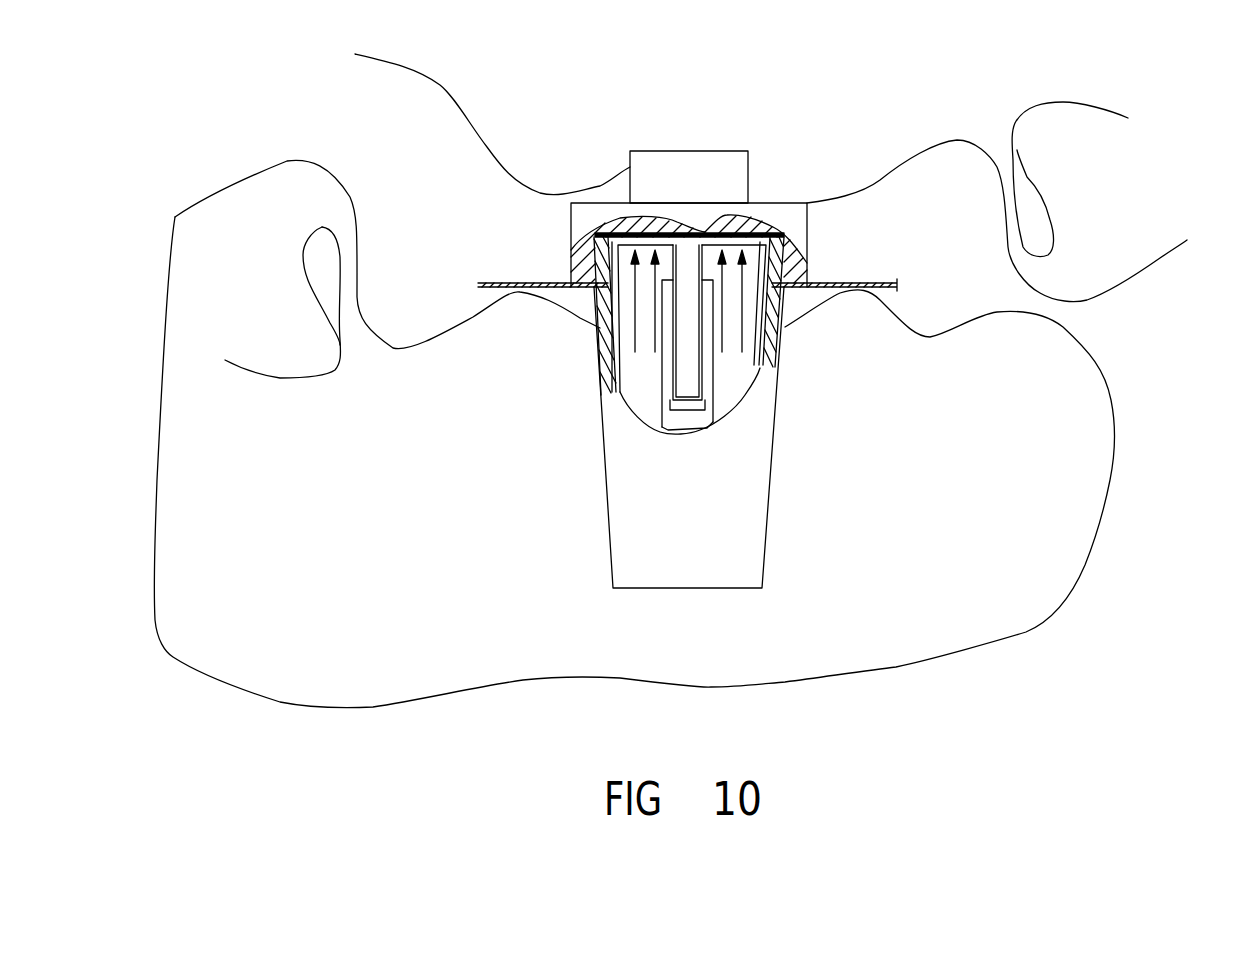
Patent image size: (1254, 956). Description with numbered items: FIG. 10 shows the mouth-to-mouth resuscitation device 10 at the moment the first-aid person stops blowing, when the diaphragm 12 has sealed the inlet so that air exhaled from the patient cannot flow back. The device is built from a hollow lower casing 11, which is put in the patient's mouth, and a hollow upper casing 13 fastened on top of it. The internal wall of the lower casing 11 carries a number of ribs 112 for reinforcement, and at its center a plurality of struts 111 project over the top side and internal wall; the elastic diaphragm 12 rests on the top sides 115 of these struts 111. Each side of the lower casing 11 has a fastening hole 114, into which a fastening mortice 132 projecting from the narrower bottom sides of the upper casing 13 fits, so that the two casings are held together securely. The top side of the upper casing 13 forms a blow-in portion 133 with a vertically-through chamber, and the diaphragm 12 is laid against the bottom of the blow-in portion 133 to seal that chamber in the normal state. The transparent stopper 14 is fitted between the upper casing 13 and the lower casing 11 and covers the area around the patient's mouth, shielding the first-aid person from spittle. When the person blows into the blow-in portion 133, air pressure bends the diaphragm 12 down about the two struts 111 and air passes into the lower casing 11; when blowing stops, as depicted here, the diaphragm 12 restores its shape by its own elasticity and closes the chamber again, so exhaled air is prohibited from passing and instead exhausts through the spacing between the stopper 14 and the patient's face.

The dental implant assembly 10 is at (838, 182).
The lower casing 11 is at (603, 368).
The struts 111 is at (613, 320).
The ribs 112 is at (710, 410).
The fastening hole 114 is at (673, 408).
The fastening mortice 132 is at (688, 332).
The diaphragm 12 is at (707, 232).
The upper casing 13 is at (571, 222).
The blow-in portion 133 is at (714, 185).
The top side of the struts 115 is at (772, 232).
The transparent stopper 14 is at (480, 283).